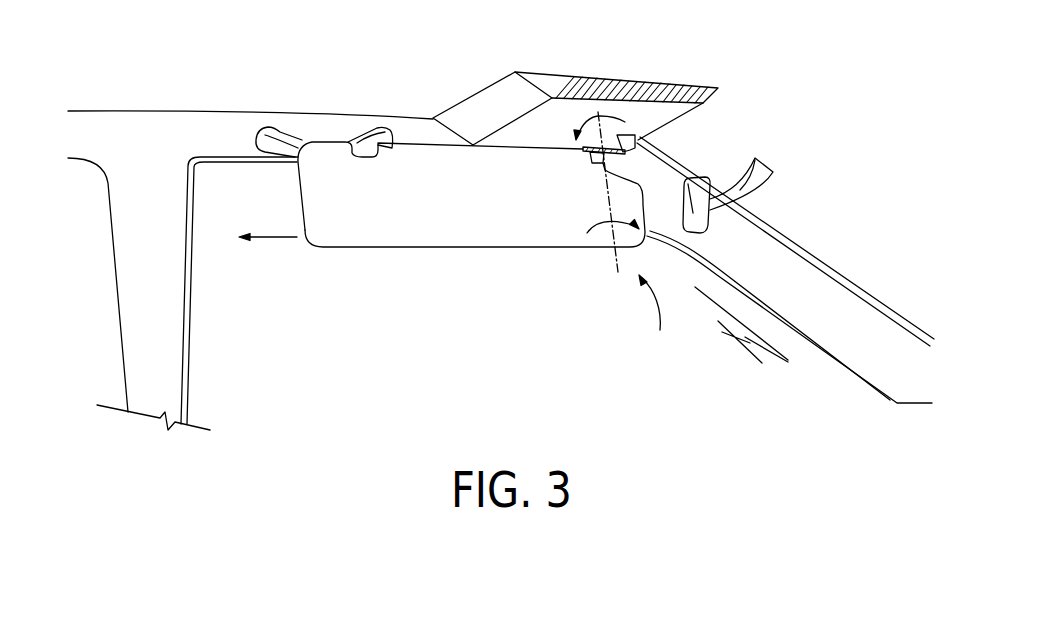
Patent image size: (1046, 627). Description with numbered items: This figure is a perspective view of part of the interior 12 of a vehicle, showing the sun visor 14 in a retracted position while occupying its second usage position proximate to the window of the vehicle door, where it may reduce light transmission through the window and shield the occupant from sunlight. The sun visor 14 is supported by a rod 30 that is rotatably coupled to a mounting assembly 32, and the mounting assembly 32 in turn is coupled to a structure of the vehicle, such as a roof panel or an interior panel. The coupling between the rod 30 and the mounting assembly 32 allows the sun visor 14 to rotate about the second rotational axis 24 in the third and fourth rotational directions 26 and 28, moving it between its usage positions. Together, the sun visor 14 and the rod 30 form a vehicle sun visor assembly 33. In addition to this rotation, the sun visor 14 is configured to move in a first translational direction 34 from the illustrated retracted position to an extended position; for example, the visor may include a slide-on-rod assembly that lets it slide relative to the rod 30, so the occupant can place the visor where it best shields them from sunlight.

The interior 12 is at (253, 190).
The sun visor 14 is at (482, 248).
The second rotational axis 24 is at (616, 252).
The third rotational direction 26 is at (590, 122).
The fourth rotational direction 28 is at (597, 222).
The rod 30 is at (590, 164).
The mounting assembly 32 is at (628, 148).
The vehicle sun visor assembly 33 is at (657, 318).
The first translational direction 34 is at (279, 237).